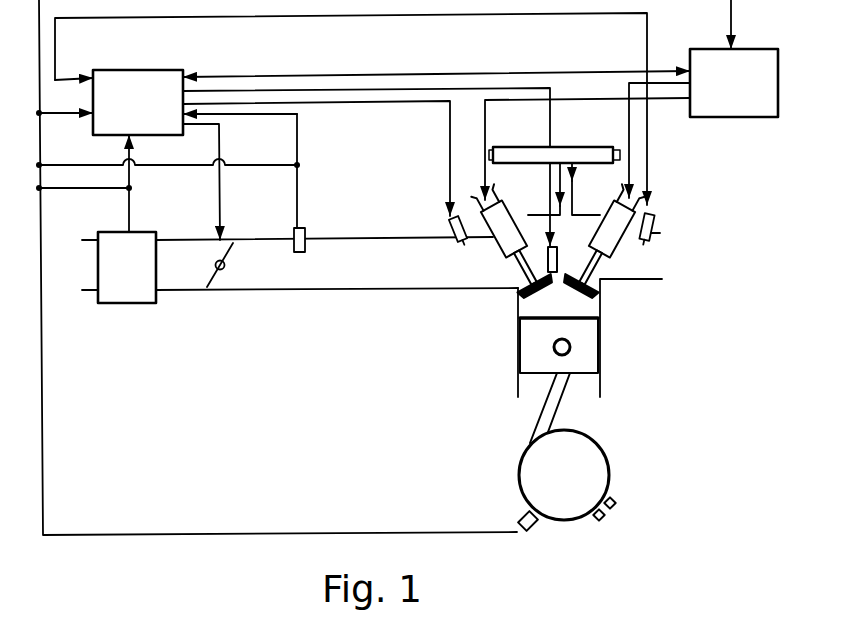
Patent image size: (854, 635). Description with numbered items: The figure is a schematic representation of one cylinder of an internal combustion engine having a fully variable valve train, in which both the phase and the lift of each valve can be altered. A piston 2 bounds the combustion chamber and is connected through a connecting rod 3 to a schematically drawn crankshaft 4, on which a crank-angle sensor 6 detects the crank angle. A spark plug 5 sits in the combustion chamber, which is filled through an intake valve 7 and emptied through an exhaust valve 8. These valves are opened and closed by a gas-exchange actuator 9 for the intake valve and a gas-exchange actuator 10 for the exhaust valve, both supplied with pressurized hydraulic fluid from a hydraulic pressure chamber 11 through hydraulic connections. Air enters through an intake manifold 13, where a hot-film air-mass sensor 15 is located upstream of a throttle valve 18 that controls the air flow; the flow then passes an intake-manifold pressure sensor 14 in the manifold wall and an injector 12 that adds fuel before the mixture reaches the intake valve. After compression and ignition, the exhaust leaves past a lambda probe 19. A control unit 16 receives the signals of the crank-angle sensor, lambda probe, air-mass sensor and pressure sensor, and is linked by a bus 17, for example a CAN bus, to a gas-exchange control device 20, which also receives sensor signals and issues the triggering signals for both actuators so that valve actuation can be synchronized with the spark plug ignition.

The piston 2 is at (588, 358).
The connecting rod 3 is at (548, 410).
The crankshaft 4 is at (580, 457).
The spark plug 5 is at (563, 296).
The crank-angle sensor 6 is at (531, 529).
The intake valve 7 is at (518, 298).
The exhaust valve 8 is at (594, 267).
The gas-exchange actuator for intake valve 9 is at (503, 254).
The gas-exchange actuator for exhaust valve 10 is at (603, 240).
The hydraulic pressure chamber 11 is at (522, 157).
The injector 12 is at (436, 220).
The intake manifold 13 is at (347, 262).
The intake-manifold pressure sensor 14 is at (305, 229).
The hot-film air-mass sensor 15 is at (113, 277).
The control unit 16 is at (124, 115).
The bus 17 is at (294, 74).
The throttle valve 18 is at (219, 271).
The lambda probe 19 is at (656, 202).
The gas-exchange control device 20 is at (720, 96).